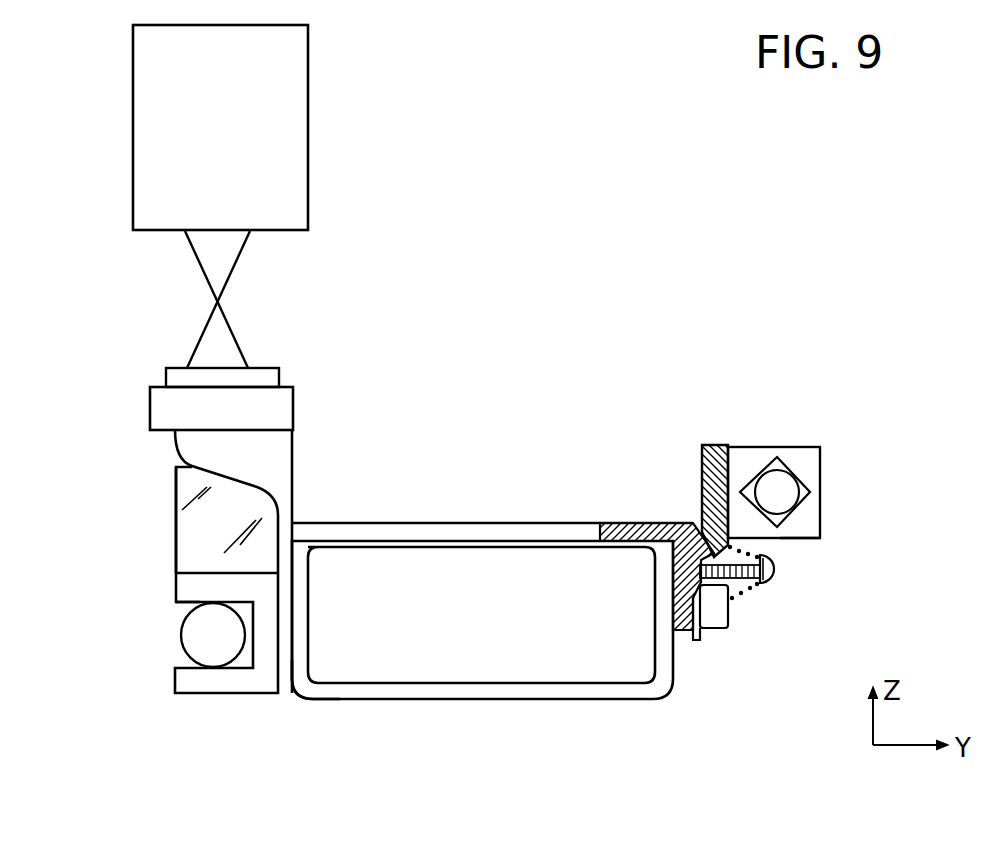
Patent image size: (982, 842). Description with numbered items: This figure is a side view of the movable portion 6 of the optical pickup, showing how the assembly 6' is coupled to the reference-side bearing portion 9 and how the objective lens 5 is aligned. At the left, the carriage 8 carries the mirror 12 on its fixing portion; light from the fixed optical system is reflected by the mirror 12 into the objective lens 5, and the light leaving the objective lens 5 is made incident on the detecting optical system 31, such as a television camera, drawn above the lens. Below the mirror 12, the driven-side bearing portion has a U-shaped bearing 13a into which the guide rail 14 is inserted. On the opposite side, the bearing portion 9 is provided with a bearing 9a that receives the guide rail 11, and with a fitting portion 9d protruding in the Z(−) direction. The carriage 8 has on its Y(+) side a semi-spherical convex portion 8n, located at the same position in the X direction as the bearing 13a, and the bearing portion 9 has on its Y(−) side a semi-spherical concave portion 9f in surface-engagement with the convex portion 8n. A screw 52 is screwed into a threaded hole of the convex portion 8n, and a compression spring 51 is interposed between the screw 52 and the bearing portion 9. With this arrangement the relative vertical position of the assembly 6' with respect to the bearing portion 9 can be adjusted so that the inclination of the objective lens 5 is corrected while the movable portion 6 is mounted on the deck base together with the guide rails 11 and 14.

The detecting optical system 31 is at (297, 112).
The objective lens 5 is at (230, 362).
The guide rail 14 is at (283, 405).
The carriage 8 is at (302, 527).
The mirror 12 is at (187, 535).
The U-shaped bearing 13a is at (182, 601).
The movable portion 6 is at (482, 670).
The assembly 6' is at (316, 723).
The semi-spherical convex portion 8n is at (693, 598).
The fitting portion 9d is at (702, 608).
The screw 52 is at (773, 582).
The compression spring 51 is at (743, 597).
The semi-spherical concave portion 9f is at (700, 527).
The bearing portion 9 is at (790, 437).
The bearing 9a is at (813, 483).
The guide rail 11 is at (812, 540).